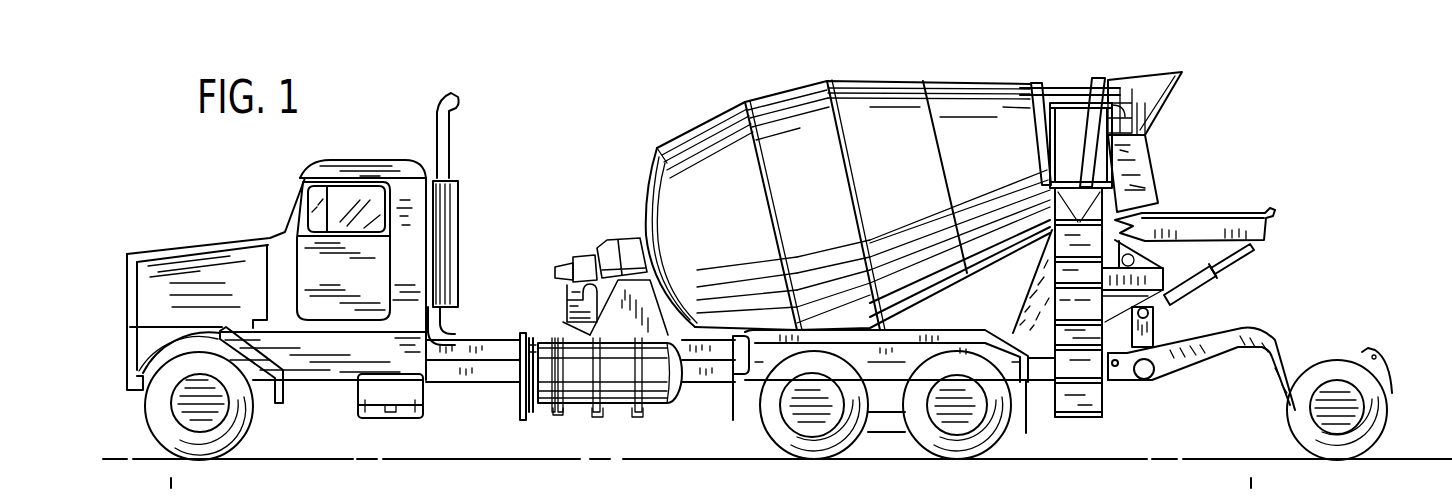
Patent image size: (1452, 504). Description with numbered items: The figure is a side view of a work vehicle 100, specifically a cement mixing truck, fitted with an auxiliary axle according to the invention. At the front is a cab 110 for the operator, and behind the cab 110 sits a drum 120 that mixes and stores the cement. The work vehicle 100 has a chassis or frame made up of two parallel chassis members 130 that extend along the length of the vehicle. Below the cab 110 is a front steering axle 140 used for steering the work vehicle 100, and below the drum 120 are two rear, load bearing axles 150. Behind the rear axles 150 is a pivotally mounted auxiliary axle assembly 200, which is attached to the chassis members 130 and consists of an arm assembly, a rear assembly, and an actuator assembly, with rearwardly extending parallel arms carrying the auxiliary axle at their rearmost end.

The work vehicle 100 is at (960, 250).
The cab 110 is at (383, 180).
The drum 120 is at (917, 108).
The chassis members 130 is at (1039, 367).
The front steering axle 140 is at (213, 406).
The rear load bearing axles 150 is at (950, 415).
The auxiliary axle assembly 200 is at (1279, 331).